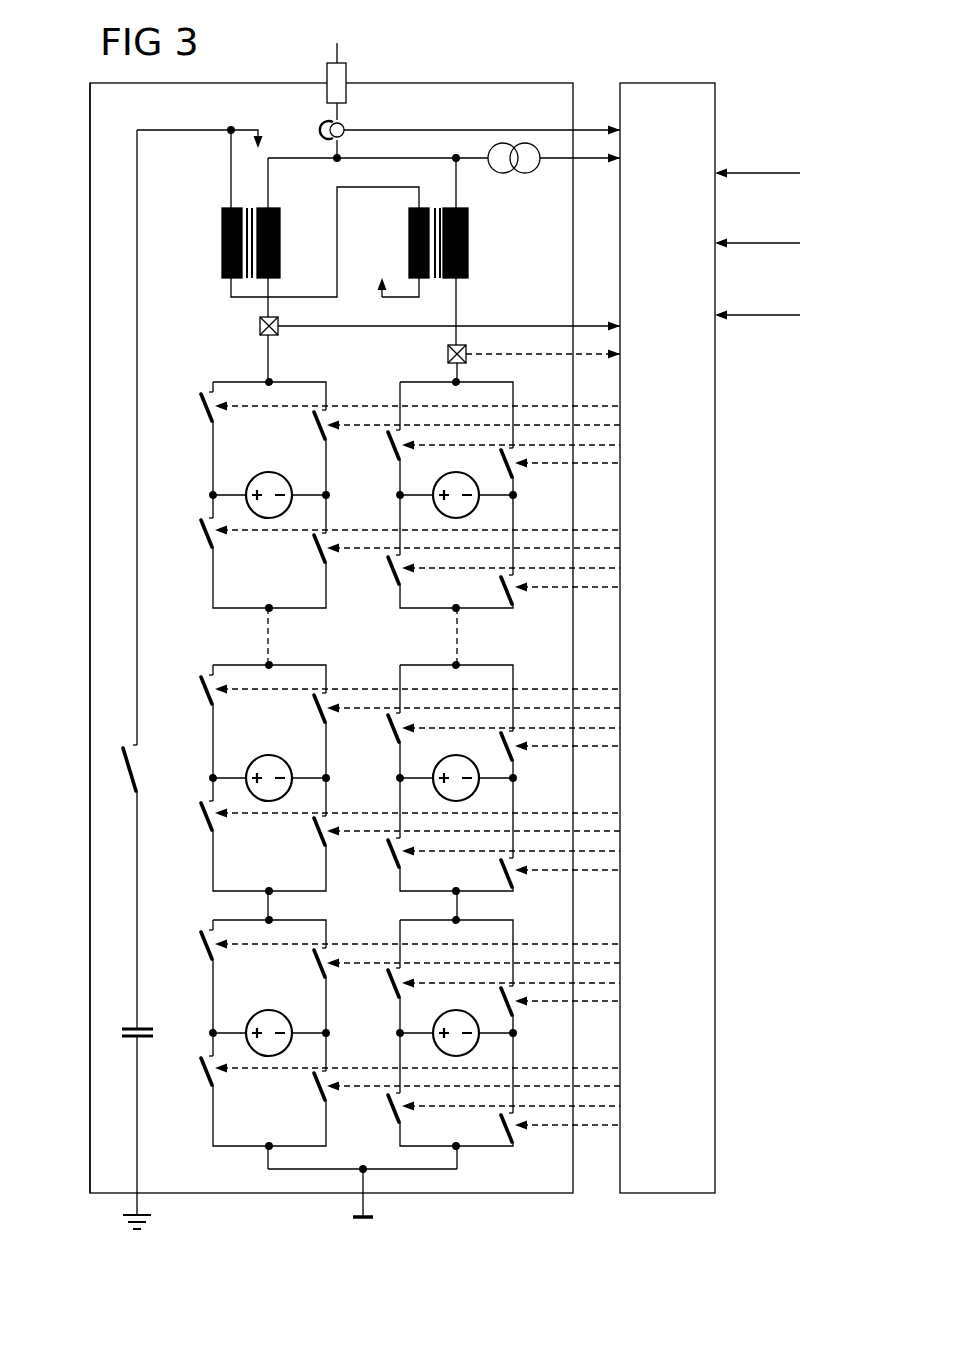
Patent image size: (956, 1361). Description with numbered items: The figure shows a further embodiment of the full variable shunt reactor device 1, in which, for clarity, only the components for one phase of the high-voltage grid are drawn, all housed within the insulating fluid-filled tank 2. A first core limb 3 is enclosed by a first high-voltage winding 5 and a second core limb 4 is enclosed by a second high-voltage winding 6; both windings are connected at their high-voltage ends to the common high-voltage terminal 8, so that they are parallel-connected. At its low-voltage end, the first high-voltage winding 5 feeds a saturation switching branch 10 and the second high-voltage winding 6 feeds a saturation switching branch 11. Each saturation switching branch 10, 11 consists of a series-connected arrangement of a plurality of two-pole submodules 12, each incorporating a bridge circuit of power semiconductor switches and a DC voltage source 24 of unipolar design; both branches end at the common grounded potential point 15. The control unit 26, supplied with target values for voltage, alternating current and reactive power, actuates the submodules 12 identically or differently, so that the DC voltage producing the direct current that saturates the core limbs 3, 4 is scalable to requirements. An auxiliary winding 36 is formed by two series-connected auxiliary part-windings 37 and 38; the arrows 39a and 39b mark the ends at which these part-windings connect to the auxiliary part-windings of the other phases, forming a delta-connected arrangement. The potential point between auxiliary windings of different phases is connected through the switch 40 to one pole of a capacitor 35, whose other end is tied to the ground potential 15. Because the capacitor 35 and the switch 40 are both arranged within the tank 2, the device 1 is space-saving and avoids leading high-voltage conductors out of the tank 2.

The device 1 is at (80, 390).
The tank 2 is at (90, 893).
The first core limb 3 is at (248, 206).
The second core limb 4 is at (436, 206).
The first high-voltage winding 5 is at (282, 245).
The second high-voltage winding 6 is at (470, 245).
The high-voltage terminal 8 is at (347, 75).
The saturation switching branch 10 is at (214, 368).
The saturation switching branch 11 is at (520, 335).
The two-pole submodule 12 is at (209, 624).
The common potential point 15 is at (362, 1217).
The DC voltage source 24 is at (247, 487).
The control unit 26 is at (715, 925).
The capacitor 35 is at (120, 1030).
The auxiliary winding 36 is at (160, 190).
The auxiliary part-winding 37 is at (221, 245).
The auxiliary part-winding 38 is at (408, 245).
The end of auxiliary part-winding 39a is at (257, 130).
The end of auxiliary part-winding 39b is at (402, 297).
The switch 40 is at (130, 776).